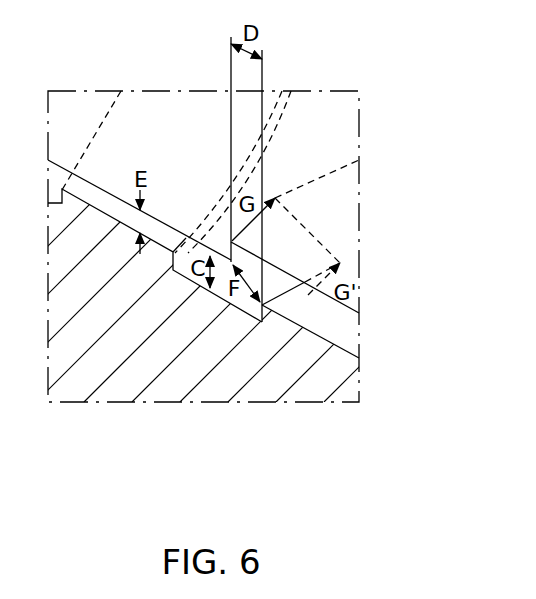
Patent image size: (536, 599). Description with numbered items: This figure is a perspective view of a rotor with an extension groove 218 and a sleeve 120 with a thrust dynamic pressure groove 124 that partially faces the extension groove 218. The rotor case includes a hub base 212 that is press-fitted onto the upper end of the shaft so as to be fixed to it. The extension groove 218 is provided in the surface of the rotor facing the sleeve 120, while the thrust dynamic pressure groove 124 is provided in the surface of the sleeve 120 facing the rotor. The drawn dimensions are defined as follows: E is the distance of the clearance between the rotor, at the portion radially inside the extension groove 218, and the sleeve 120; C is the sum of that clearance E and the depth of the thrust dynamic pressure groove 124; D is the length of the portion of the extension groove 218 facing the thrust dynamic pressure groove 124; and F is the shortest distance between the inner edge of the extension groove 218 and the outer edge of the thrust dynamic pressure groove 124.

The sleeve 120 is at (192, 367).
The thrust dynamic pressure groove 124 is at (198, 300).
The hub base 212 is at (328, 133).
The extension groove 218 is at (231, 240).